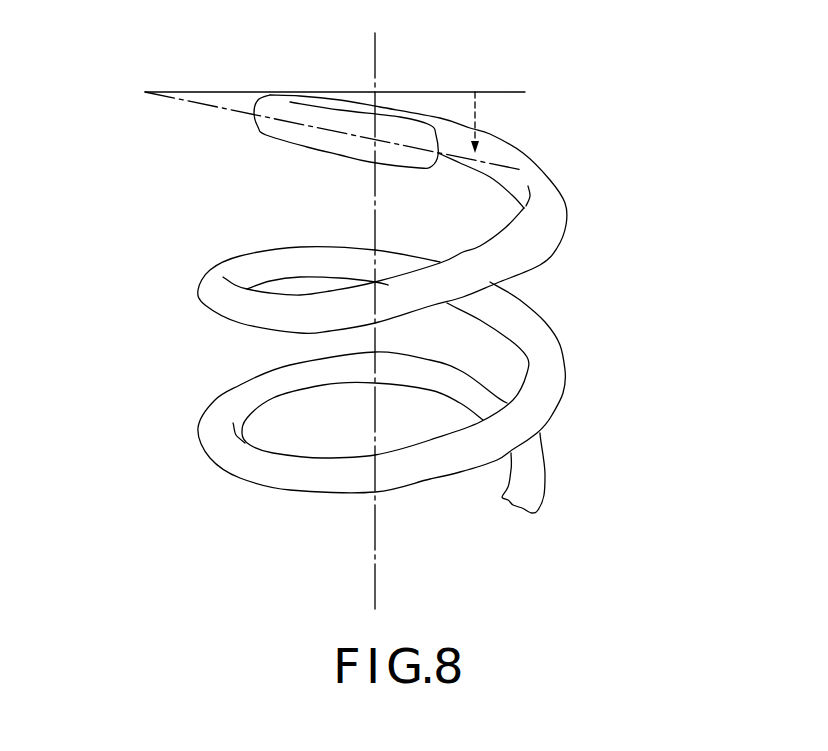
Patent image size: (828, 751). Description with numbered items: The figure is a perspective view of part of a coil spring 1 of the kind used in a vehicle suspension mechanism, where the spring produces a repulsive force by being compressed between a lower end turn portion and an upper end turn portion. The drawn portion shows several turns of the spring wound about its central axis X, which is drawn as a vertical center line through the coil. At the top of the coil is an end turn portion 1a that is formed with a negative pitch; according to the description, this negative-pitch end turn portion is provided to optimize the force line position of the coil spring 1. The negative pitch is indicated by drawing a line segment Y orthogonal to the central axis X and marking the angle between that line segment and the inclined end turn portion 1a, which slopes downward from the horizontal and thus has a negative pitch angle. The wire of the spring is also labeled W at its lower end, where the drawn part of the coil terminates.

The coil spring 1 is at (420, 304).
The end turn portion 1a is at (338, 153).
The wire end W is at (545, 398).
The central axis X is at (377, 53).
The line segment Y is at (443, 92).